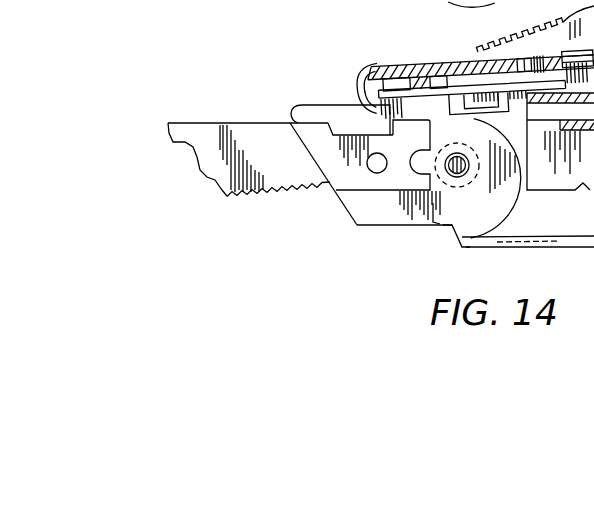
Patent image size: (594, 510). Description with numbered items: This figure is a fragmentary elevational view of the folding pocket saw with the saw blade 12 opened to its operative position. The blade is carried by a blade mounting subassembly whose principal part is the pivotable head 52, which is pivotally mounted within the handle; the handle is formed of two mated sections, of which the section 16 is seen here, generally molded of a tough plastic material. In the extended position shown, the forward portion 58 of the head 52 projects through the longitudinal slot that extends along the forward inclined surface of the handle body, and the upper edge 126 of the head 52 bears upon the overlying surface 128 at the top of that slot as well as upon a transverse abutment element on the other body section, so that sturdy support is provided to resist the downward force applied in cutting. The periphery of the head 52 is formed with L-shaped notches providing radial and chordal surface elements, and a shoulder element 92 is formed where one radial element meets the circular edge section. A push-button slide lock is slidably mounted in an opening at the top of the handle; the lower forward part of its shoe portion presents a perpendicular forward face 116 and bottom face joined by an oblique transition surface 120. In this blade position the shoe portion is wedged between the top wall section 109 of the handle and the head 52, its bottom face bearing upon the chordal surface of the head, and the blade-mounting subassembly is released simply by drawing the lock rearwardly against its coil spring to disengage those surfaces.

The saw blade 12 is at (232, 116).
The mated section 16 is at (571, 230).
The pivotable head 52 is at (357, 236).
The forward portion 58 is at (332, 112).
The shoulder element 92 is at (457, 232).
The top wall section 109 is at (497, 42).
The forward face 116 is at (452, 76).
The oblique transition surface 120 is at (485, 121).
The upper edge 126 is at (362, 108).
The overlying surface 128 is at (372, 67).